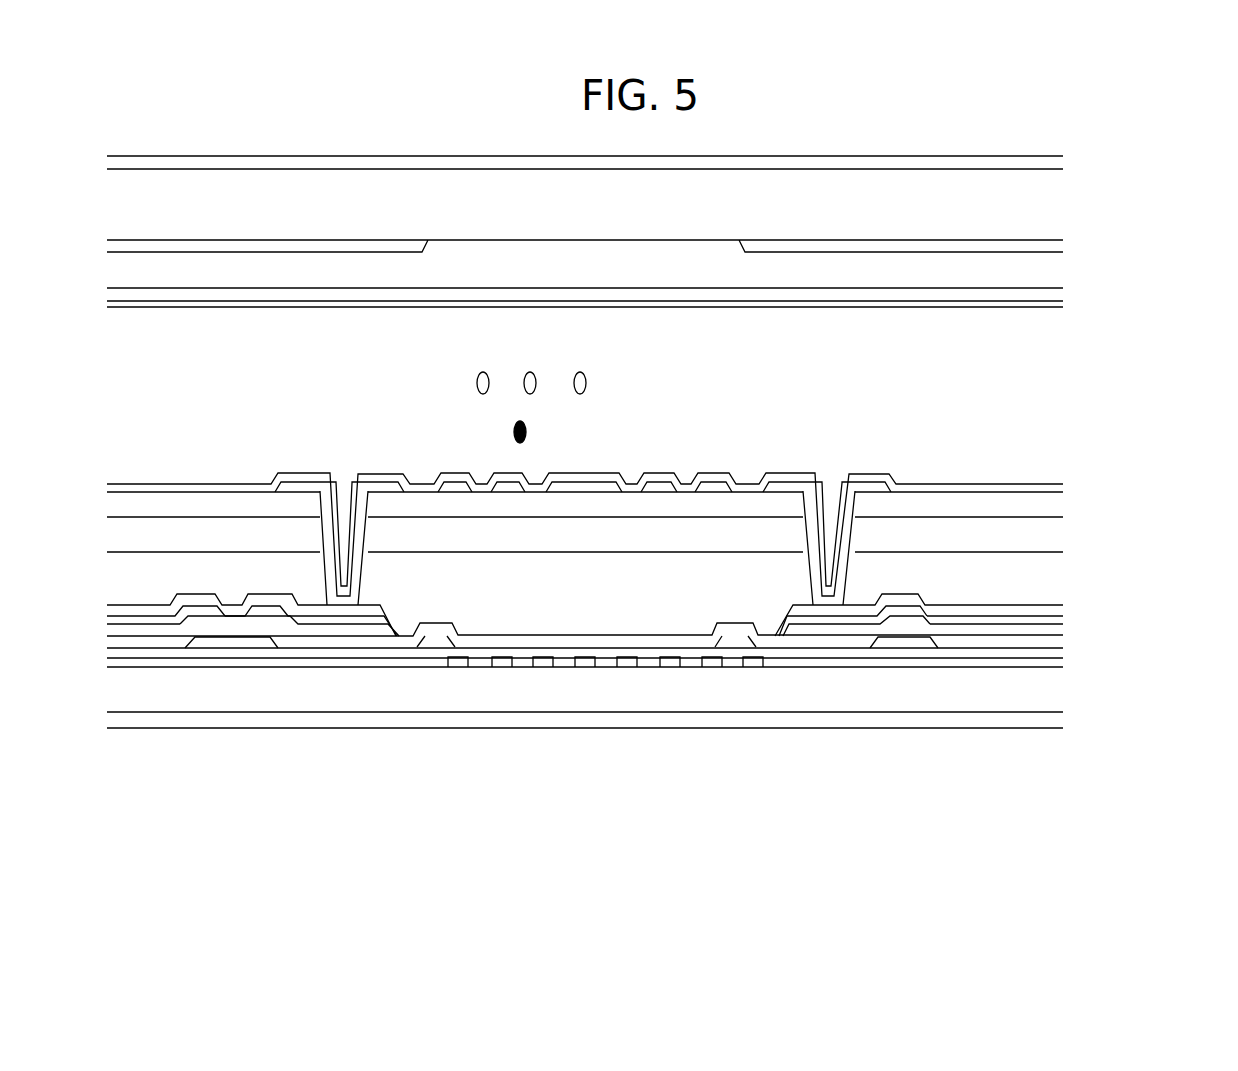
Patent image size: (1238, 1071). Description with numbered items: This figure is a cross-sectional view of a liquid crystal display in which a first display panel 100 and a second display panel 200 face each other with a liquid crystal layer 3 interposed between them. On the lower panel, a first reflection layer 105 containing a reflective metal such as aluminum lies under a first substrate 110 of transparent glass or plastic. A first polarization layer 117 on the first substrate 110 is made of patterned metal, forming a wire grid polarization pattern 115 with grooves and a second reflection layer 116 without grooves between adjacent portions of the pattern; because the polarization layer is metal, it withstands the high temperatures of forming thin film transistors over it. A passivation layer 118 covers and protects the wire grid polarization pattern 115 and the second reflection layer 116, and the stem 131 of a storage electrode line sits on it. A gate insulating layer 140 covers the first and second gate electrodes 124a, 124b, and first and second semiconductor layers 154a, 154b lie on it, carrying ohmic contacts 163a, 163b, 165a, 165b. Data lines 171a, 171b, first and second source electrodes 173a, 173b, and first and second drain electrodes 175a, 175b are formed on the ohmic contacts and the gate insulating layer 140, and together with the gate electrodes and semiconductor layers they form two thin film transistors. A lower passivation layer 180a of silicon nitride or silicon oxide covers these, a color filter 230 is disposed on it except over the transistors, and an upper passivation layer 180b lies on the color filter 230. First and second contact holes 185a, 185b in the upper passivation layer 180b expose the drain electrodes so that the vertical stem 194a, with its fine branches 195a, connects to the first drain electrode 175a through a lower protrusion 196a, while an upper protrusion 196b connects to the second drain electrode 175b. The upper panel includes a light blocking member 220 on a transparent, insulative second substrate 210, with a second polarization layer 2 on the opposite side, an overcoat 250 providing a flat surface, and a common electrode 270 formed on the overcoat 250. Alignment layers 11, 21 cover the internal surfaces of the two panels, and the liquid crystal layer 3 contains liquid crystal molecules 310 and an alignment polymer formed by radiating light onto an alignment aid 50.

The second polarization layer 2 is at (1016, 166).
The alignment layer 21 is at (876, 308).
The second display panel 200 is at (1078, 170).
The second substrate 210 is at (483, 190).
The light blocking member 220 is at (370, 248).
The overcoat 250 is at (600, 270).
The common electrode 270 is at (688, 300).
The liquid crystal layer 3 is at (1078, 310).
The liquid crystal molecules 310 is at (587, 383).
The alignment aid 50 is at (527, 432).
The first display panel 100 is at (1078, 490).
The alignment layer 11 is at (1028, 488).
The first reflection layer 105 is at (693, 718).
The first substrate 110 is at (658, 697).
The wire grid polarization pattern 115 is at (583, 660).
The second reflection layer 116 is at (294, 662).
The first polarization layer 117 is at (1166, 722).
The passivation layer 118 is at (648, 662).
The first gate electrode 124a is at (250, 642).
The second gate electrode 124b is at (897, 640).
The stem 131 is at (435, 640).
The gate insulating layer 140 is at (485, 640).
The first semiconductor layer 154a is at (213, 615).
The second semiconductor layer 154b is at (920, 628).
The ohmic contact 163a is at (162, 628).
The ohmic contact 163b is at (985, 628).
The ohmic contact 165a is at (306, 628).
The ohmic contact 165b is at (860, 612).
The data line 171a is at (120, 615).
The data line 171b is at (1045, 618).
The first source electrode 173a is at (188, 600).
The second source electrode 173b is at (992, 600).
The first drain electrode 175a is at (350, 612).
The second drain electrode 175b is at (812, 598).
The lower passivation layer 180a is at (552, 610).
The upper passivation layer 180b is at (688, 505).
The first contact hole 185a is at (340, 492).
The second contact hole 185b is at (826, 492).
The vertical stem 194a is at (600, 487).
The fine branches 195a is at (456, 488).
The lower protrusion 196a is at (302, 490).
The upper protrusion 196b is at (866, 488).
The color filter 230 is at (606, 535).